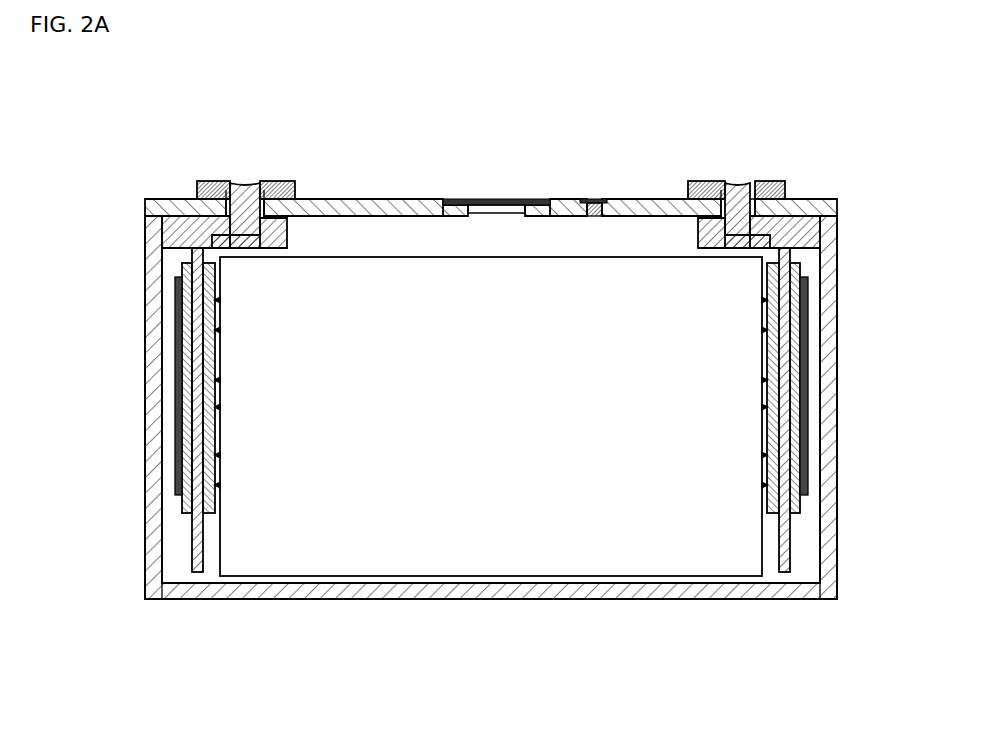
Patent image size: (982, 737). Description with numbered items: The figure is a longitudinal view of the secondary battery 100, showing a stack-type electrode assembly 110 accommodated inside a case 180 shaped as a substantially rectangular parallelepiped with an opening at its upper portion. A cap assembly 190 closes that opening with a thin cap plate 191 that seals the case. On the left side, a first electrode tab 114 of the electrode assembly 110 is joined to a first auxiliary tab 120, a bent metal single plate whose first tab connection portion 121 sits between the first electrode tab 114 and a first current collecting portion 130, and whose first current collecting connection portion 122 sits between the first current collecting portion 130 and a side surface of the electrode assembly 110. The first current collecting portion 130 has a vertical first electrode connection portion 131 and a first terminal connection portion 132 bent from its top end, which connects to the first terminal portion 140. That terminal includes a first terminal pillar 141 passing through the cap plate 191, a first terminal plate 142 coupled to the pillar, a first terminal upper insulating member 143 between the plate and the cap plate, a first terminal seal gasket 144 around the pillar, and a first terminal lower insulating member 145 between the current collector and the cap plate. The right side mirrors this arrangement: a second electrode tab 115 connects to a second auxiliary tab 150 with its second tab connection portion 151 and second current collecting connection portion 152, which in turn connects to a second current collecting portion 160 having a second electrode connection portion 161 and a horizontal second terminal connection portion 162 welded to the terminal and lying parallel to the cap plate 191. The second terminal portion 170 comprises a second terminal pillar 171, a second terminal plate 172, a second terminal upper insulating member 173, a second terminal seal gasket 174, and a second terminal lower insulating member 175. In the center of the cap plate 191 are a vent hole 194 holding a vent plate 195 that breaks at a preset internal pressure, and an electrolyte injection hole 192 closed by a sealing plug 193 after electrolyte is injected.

The secondary battery 100 is at (880, 134).
The electrode assembly 110 is at (494, 580).
The first electrode tab 114 is at (205, 510).
The second electrode tab 115 is at (803, 510).
The first auxiliary tab 120 is at (128, 388).
The first tab connection portion 121 is at (185, 392).
The first current collecting connection portion 122 is at (185, 437).
The first current collecting portion 130 is at (119, 403).
The first electrode connection portion 131 is at (200, 352).
The first terminal connection portion 132 is at (210, 240).
The first terminal portion 140 is at (207, 166).
The first terminal pillar 141 is at (245, 183).
The first terminal plate 142 is at (287, 181).
The first terminal upper insulating member 143 is at (205, 181).
The first terminal seal gasket 144 is at (227, 182).
The first terminal lower insulating member 145 is at (290, 232).
The second auxiliary tab 150 is at (854, 388).
The second tab connection portion 151 is at (800, 392).
The second current collecting connection portion 152 is at (778, 437).
The second current collecting portion 160 is at (863, 403).
The second electrode connection portion 161 is at (783, 353).
The second terminal connection portion 162 is at (790, 242).
The second terminal portion 170 is at (774, 166).
The second terminal pillar 171 is at (739, 187).
The second terminal plate 172 is at (698, 181).
The second terminal upper insulating member 173 is at (783, 181).
The second terminal seal gasket 174 is at (757, 182).
The second terminal lower insulating member 175 is at (692, 232).
The case 180 is at (688, 595).
The cap assembly 190 is at (505, 159).
The cap plate 191 is at (417, 199).
The electrolyte injection hole 192 is at (595, 216).
The sealing plug 193 is at (596, 199).
The vent hole 194 is at (518, 212).
The vent plate 195 is at (512, 179).